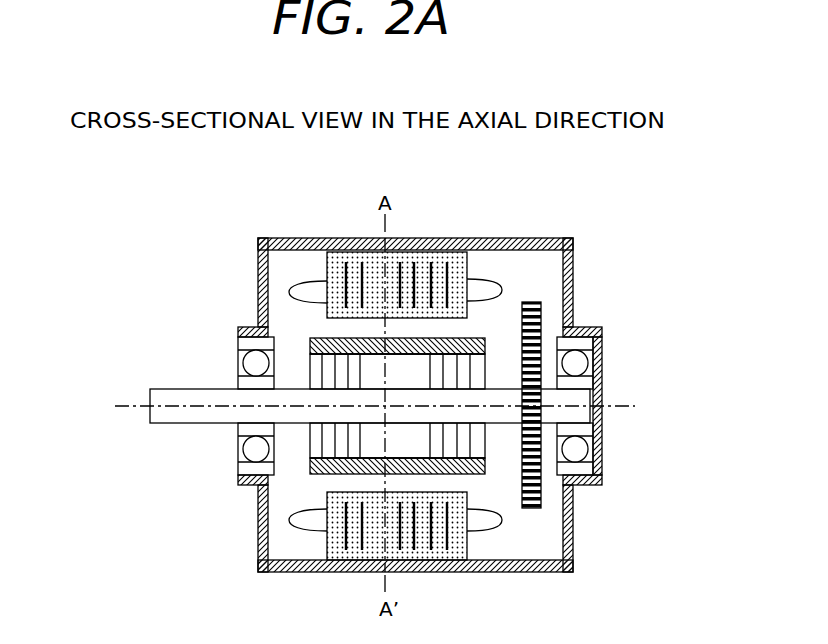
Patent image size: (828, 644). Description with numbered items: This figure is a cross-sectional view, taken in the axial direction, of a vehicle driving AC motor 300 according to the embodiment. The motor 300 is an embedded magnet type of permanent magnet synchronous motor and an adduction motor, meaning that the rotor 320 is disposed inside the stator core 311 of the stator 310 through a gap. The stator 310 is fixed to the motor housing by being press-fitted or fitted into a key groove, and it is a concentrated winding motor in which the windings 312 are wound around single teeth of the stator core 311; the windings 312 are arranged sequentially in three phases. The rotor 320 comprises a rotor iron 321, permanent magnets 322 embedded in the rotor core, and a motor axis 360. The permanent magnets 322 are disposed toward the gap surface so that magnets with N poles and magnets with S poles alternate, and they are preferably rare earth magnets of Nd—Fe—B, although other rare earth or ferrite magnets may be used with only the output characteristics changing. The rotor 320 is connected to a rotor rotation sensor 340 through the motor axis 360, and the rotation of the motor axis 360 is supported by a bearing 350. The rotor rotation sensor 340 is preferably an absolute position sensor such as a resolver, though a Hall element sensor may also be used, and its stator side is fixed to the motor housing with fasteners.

The motor 300 is at (258, 275).
The stator 310 is at (322, 272).
The stator core 311 is at (380, 288).
The windings 312 is at (303, 292).
The rotor 320 is at (310, 363).
The rotor iron 321 is at (310, 355).
The permanent magnets 322 is at (310, 340).
The rotor rotation sensor 340 is at (541, 313).
The bearing 350 is at (242, 450).
The motor axis 360 is at (152, 415).